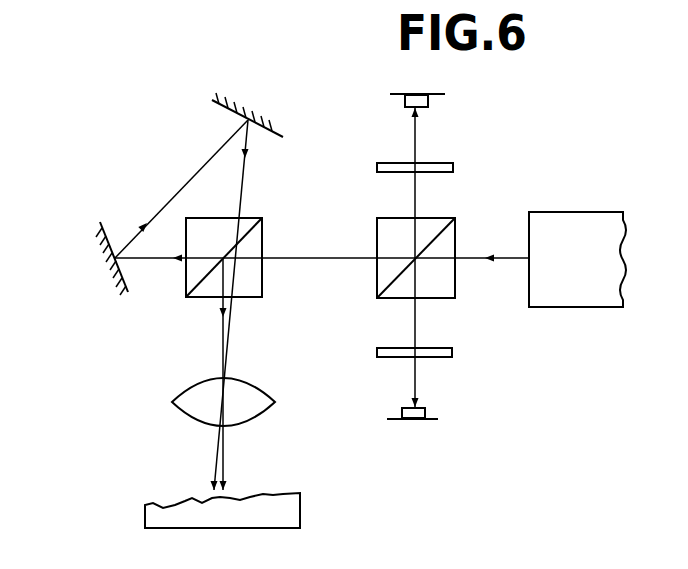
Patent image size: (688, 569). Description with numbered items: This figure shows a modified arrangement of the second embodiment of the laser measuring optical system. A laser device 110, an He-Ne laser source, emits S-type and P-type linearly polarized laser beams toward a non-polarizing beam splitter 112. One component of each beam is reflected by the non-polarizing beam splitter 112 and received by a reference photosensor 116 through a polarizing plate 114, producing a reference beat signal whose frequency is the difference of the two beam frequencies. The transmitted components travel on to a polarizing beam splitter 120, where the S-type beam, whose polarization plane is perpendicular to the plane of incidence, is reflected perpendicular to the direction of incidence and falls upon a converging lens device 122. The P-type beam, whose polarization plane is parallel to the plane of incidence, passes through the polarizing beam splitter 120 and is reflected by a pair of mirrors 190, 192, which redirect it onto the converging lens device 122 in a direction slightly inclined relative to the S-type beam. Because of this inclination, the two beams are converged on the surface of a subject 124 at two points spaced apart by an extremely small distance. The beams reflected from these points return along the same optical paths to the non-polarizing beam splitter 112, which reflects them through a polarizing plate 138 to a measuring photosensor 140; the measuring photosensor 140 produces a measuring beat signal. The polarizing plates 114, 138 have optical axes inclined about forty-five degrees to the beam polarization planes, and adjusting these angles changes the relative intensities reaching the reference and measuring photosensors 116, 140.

The laser device 110 is at (563, 228).
The non-polarizing beam splitter 112 is at (383, 238).
The polarizing plate 114 is at (438, 352).
The reference photosensor 116 is at (418, 413).
The polarizing beam splitter 120 is at (252, 280).
The converging lens device 122 is at (257, 402).
The subject 124 is at (280, 507).
The polarizing plate 138 is at (392, 165).
The measuring photosensor 140 is at (430, 100).
The mirror 190 is at (106, 224).
The mirror 192 is at (230, 111).